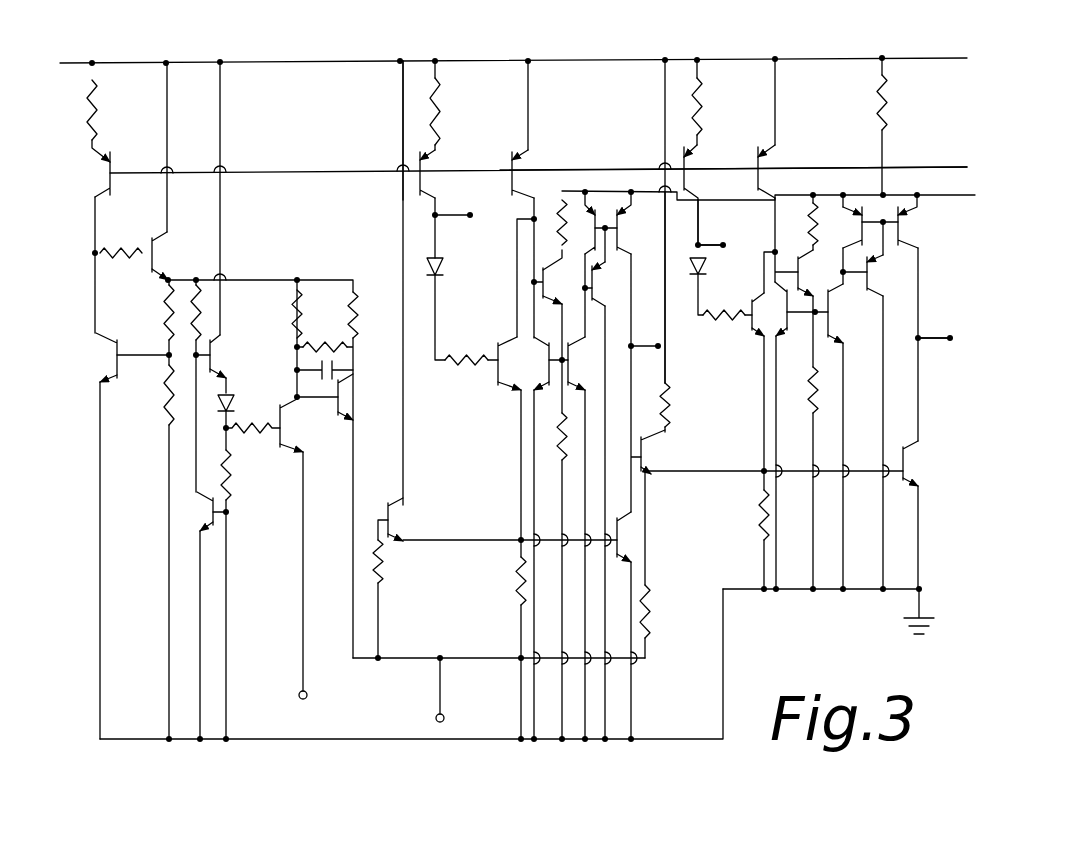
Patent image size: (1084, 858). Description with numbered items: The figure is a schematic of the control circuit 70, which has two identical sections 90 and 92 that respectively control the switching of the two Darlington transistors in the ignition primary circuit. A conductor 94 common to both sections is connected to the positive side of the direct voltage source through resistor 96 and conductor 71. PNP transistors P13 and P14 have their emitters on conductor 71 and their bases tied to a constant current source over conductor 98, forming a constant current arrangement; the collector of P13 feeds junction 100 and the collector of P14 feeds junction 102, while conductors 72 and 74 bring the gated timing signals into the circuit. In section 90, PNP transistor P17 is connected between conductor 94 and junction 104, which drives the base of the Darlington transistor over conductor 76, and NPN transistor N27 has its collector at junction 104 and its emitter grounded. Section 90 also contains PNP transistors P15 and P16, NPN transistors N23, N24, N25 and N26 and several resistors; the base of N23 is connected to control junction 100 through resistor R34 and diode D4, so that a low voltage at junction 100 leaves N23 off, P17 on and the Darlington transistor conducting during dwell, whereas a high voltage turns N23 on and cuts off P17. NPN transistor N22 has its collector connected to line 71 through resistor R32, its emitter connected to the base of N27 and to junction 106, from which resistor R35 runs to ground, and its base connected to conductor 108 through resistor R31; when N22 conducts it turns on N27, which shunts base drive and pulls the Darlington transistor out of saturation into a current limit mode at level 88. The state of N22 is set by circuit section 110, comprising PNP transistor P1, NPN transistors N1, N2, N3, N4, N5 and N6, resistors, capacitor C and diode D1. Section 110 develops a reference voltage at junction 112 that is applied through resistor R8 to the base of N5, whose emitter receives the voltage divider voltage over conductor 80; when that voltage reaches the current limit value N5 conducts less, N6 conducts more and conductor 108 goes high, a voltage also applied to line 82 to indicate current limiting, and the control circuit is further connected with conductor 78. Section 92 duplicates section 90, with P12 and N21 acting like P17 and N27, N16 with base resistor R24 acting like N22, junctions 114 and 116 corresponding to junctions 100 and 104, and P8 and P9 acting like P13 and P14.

The control circuit 70 is at (398, 58).
The conductor 71 is at (240, 63).
The conductor 98 is at (280, 173).
The current limit level 88 is at (905, 167).
The conductor 94 is at (600, 190).
The resistor 96 is at (888, 106).
The conductor 74 is at (452, 220).
The junction 114 is at (440, 215).
The junction 116 is at (633, 340).
The conductor 78 is at (665, 376).
The conductor 72 is at (725, 250).
The junction 100 is at (699, 244).
The junction 102 is at (727, 247).
The junction 104 is at (921, 336).
The conductor 76 is at (931, 340).
The conductor 80 is at (305, 575).
The line 82 is at (443, 697).
The circuit section 90 is at (835, 592).
The circuit section 92 is at (578, 746).
The junction 106 is at (762, 471).
The conductor 108 is at (447, 655).
The circuit section 110 is at (137, 458).
The junction 112 is at (226, 432).
The PNP transistor P1 is at (112, 166).
The transistor P8 is at (425, 170).
The transistor P9 is at (518, 170).
The transistor P12 is at (620, 231).
The PNP transistor P13 is at (690, 160).
The PNP transistor P14 is at (762, 160).
The PNP transistor P15 is at (850, 213).
The PNP transistor P16 is at (872, 272).
The PNP transistor P17 is at (920, 229).
The NPN transistor N1 is at (128, 326).
The NPN transistor N2 is at (156, 252).
The NPN transistor N3 is at (212, 505).
The NPN transistor N4 is at (213, 358).
The NPN transistor N5 is at (285, 430).
The NPN transistor N6 is at (357, 394).
The transistor N16 is at (395, 525).
The transistor N21 is at (620, 536).
The NPN transistor N22 is at (648, 451).
The NPN transistor N23 is at (750, 300).
The NPN transistor N24 is at (790, 334).
The NPN transistor N25 is at (806, 265).
The NPN transistor N26 is at (832, 306).
The NPN transistor N27 is at (908, 461).
The resistor R8 is at (262, 432).
The resistor R24 is at (382, 562).
The resistor R31 is at (648, 620).
The resistor R32 is at (668, 404).
The resistor R34 is at (714, 319).
The resistor R35 is at (762, 520).
The capacitor C is at (357, 363).
The diode D1 is at (230, 410).
The diode D4 is at (696, 280).